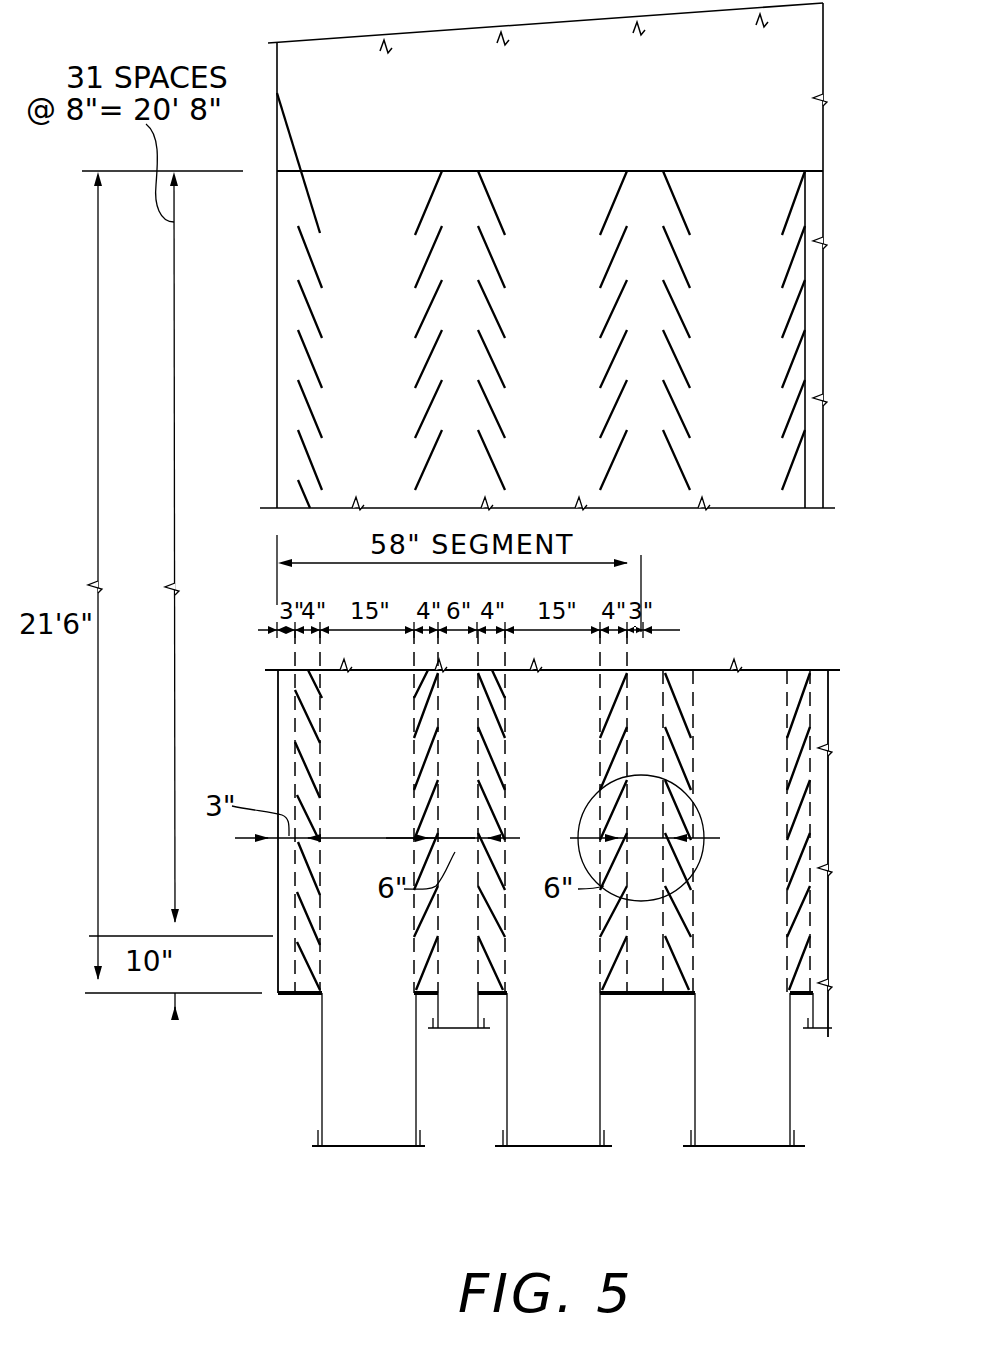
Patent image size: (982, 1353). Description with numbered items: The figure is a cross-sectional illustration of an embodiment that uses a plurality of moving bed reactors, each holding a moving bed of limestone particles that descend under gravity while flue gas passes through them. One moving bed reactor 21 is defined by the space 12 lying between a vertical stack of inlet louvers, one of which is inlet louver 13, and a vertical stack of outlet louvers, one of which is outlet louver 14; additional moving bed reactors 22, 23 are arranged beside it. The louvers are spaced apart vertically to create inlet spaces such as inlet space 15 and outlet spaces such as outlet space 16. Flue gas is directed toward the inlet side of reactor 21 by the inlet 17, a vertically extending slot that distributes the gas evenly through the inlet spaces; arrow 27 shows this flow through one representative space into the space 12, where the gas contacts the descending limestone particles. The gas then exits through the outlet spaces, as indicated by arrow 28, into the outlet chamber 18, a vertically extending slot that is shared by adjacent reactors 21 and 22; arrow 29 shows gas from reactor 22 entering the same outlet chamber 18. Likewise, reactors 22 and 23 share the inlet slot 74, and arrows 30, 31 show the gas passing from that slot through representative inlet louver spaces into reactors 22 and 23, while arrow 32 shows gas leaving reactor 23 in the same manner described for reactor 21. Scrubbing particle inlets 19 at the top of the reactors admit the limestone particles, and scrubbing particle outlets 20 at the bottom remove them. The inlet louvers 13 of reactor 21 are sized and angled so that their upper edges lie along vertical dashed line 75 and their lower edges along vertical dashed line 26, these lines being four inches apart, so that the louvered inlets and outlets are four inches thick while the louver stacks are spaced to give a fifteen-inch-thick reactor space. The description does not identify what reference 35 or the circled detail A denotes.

The space 12 is at (545, 996).
The inlet louver 13 is at (307, 915).
The outlet louver 14 is at (436, 946).
The inlet space 15 is at (310, 753).
The outlet space 16 is at (420, 760).
The inlet 17 is at (284, 860).
The outlet chamber 18 is at (459, 811).
The scrubbing particle inlet 19 is at (364, 171).
The scrubbing particle outlet 20 is at (357, 1148).
The moving bed reactor 21 is at (312, 1068).
The moving bed reactor 22 is at (499, 1087).
The moving bed reactor 23 is at (694, 1085).
The vertical dashed line 26 is at (320, 699).
The arrow 27 is at (350, 826).
The arrow 28 is at (460, 768).
The arrow 29 is at (452, 747).
The arrow 30 is at (633, 720).
The arrow 31 is at (697, 762).
The arrow 32 is at (824, 715).
The end wall 35 is at (818, 690).
The inlet slot 74 is at (712, 760).
The vertical dashed line 75 is at (296, 701).
The detail circle A is at (705, 823).